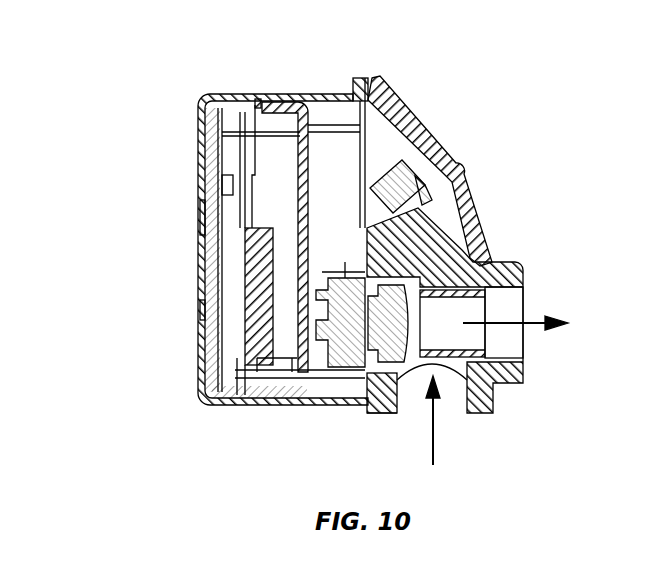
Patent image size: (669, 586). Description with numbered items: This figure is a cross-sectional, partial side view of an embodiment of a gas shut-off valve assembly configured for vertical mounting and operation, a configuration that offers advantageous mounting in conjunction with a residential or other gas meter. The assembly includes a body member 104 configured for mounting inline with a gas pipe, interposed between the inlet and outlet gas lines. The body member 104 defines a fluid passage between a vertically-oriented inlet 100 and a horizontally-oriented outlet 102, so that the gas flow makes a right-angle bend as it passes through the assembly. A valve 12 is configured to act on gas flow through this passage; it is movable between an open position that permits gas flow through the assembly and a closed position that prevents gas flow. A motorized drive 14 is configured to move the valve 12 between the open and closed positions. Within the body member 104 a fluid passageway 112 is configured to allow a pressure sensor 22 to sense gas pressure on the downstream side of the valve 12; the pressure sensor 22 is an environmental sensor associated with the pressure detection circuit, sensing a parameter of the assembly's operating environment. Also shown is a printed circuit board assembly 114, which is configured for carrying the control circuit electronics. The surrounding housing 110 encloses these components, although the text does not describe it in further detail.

The housing cover 110 is at (304, 94).
The printed circuit board assembly 114 is at (226, 311).
The fluid passageway 112 is at (466, 231).
The body member 104 is at (512, 264).
The outlet 102 is at (505, 311).
The pressure sensor 22 is at (405, 183).
The valve 12 is at (388, 320).
The motorized drive 14 is at (345, 348).
The inlet 100 is at (453, 403).